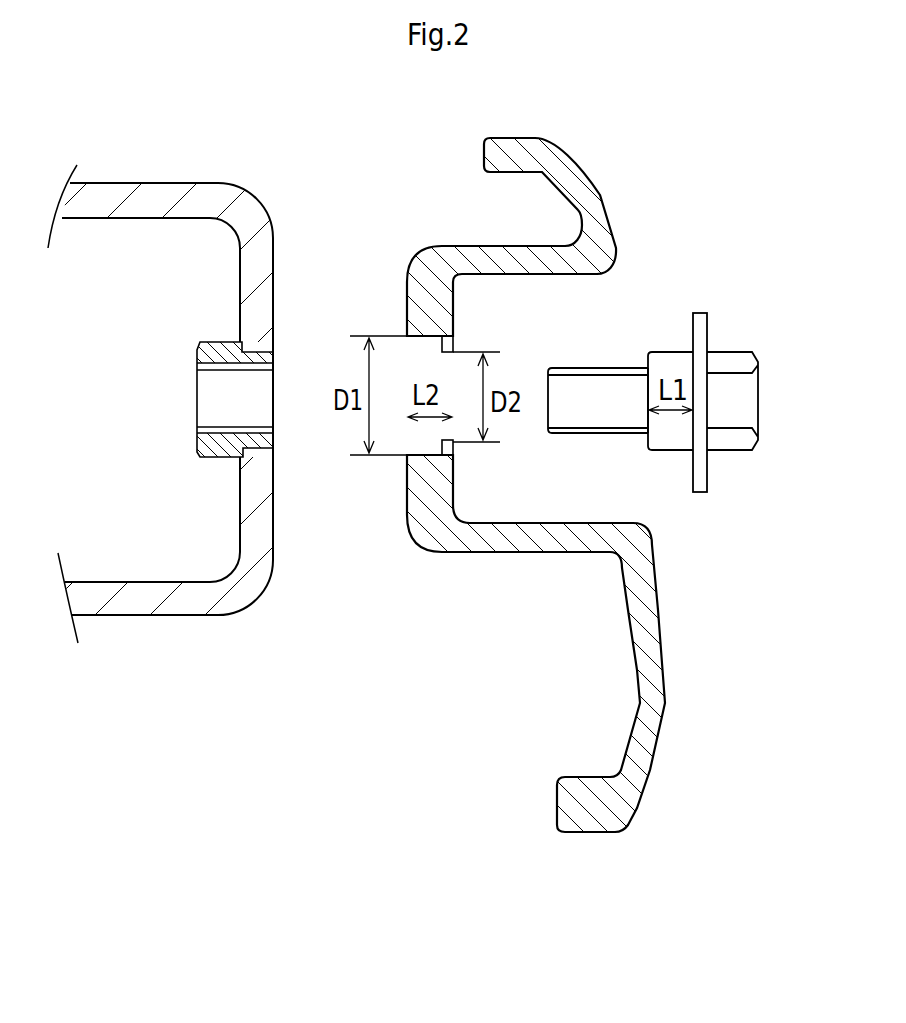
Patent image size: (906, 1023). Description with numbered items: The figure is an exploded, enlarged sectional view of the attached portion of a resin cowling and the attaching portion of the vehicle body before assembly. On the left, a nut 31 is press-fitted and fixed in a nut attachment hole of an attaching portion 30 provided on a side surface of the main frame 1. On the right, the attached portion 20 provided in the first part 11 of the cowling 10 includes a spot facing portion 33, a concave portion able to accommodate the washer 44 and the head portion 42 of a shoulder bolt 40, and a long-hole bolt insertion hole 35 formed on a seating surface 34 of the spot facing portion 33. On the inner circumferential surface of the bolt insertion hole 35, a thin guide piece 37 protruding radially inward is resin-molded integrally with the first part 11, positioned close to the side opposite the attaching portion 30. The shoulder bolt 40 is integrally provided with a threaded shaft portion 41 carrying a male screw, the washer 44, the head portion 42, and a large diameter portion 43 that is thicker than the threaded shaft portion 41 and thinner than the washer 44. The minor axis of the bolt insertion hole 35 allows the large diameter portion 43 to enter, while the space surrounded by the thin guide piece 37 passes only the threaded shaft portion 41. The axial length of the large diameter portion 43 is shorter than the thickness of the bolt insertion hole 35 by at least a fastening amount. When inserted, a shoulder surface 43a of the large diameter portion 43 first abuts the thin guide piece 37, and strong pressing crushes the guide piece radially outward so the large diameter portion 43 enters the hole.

The main frame 1 is at (212, 358).
The attaching portion 30 is at (250, 477).
The nut 31 is at (212, 358).
The attached portion 20 is at (453, 485).
The spot facing portion 33 is at (453, 485).
The seating surface 34 is at (453, 312).
The bolt insertion hole 35 is at (420, 452).
The thin guide piece 37 is at (452, 450).
The shoulder bolt 40 is at (660, 371).
The threaded shaft portion 41 is at (592, 390).
The head portion 42 is at (735, 447).
The large diameter portion 43 is at (643, 440).
The shoulder surface 43a is at (647, 423).
The washer 44 is at (702, 332).
The first part 11 is at (637, 767).
The cowling 10 is at (453, 485).